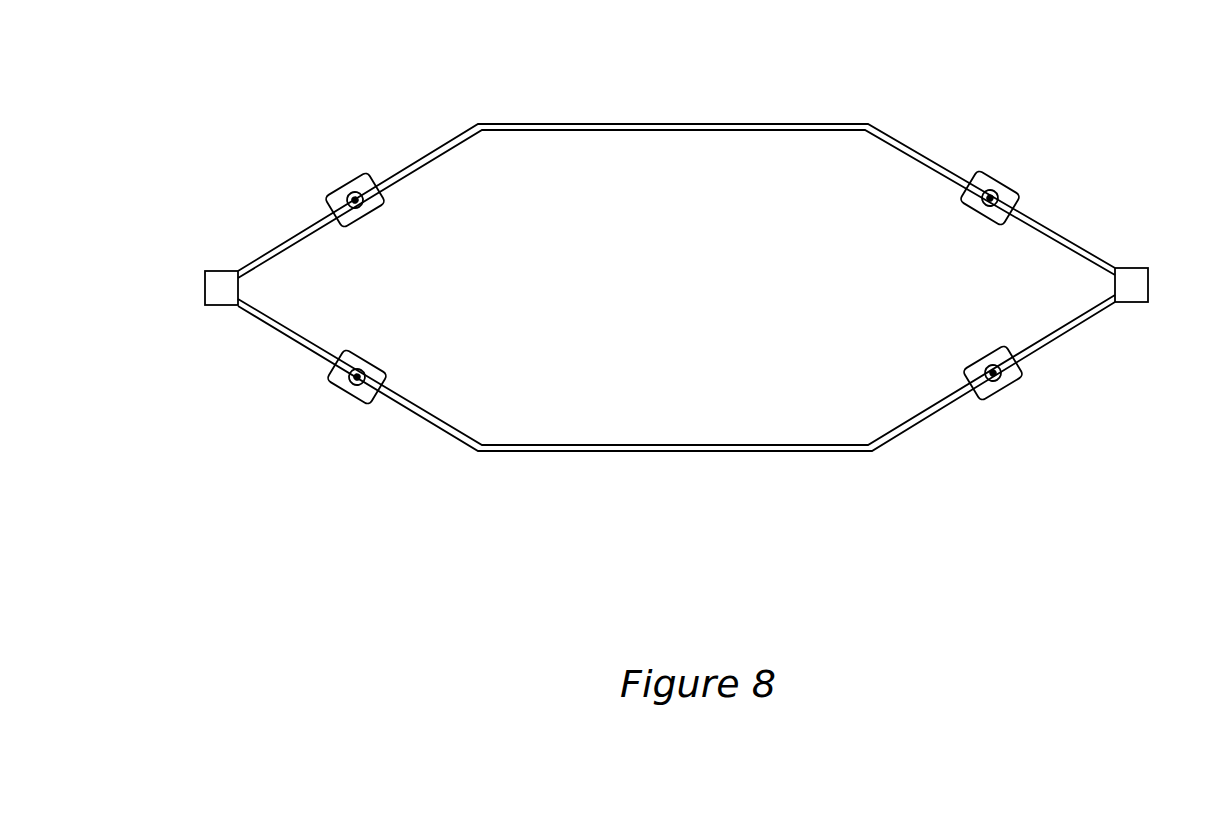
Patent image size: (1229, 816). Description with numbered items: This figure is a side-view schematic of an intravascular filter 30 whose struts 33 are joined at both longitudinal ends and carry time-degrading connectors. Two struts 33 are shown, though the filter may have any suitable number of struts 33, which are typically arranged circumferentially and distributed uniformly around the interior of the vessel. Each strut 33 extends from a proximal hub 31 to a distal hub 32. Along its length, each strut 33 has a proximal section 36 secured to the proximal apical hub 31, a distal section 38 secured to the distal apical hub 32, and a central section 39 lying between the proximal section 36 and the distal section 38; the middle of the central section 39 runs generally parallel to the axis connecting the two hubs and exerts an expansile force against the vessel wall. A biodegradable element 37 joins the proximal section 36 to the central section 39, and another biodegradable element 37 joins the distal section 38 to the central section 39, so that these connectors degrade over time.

The intravascular filter 30 is at (212, 142).
The proximal hub 31 is at (212, 277).
The distal hub 32 is at (1138, 276).
The strut 33 is at (768, 124).
The proximal section 36 is at (317, 200).
The biodegradable element 37 is at (380, 204).
The distal section 38 is at (1038, 197).
The central section 39 is at (968, 170).